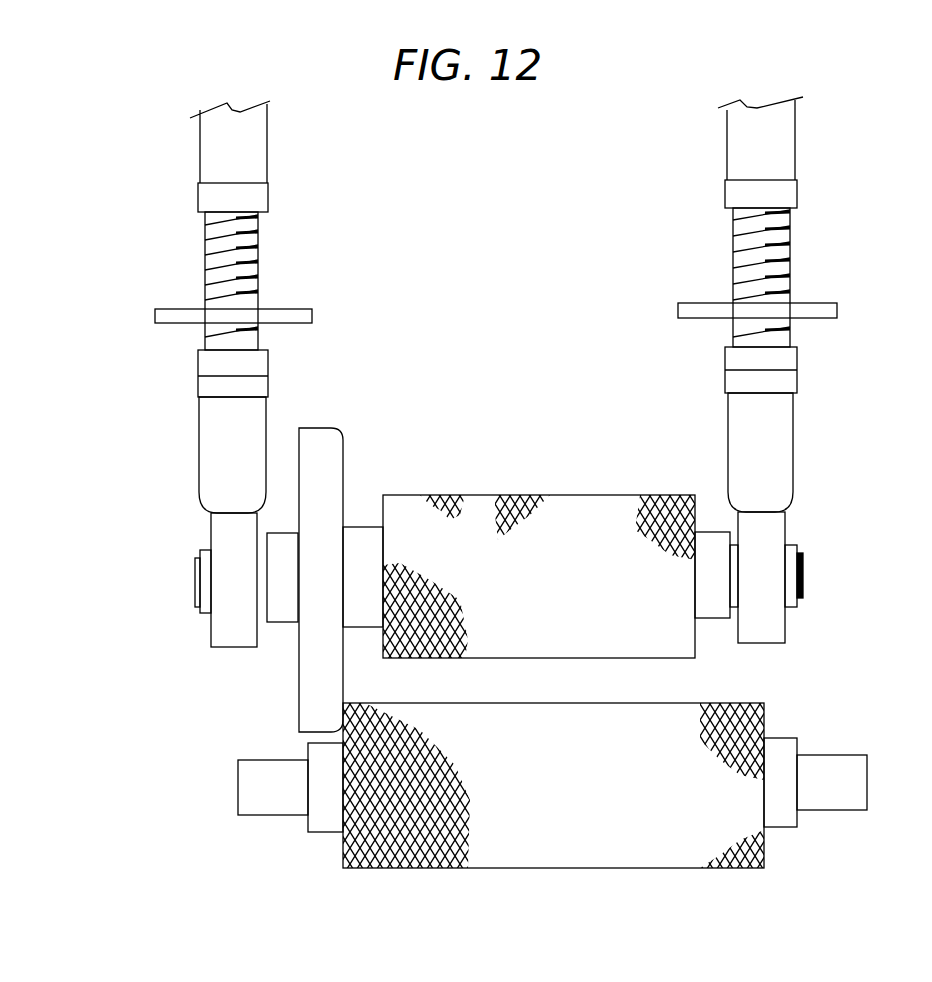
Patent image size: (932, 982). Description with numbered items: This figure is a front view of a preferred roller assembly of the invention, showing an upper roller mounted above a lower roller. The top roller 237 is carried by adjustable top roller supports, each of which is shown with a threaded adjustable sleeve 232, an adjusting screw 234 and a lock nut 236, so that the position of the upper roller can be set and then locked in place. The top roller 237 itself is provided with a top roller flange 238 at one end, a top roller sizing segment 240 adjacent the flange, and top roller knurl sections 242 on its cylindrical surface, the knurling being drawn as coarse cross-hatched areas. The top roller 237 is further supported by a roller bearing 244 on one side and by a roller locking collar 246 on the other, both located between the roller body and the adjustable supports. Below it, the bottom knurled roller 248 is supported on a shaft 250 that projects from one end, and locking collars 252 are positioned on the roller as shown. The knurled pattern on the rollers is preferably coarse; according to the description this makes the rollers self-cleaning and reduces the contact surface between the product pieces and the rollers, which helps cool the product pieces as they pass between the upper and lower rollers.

The threaded adjustable sleeve 232 is at (795, 158).
The adjusting screw 234 is at (790, 250).
The lock nut 236 is at (797, 365).
The top roller 237 is at (442, 495).
The top roller flange 238 is at (330, 428).
The top roller sizing segment 240 is at (363, 527).
The top roller knurl section 242 is at (512, 495).
The roller bearing 244 is at (793, 526).
The roller locking collar 246 is at (707, 532).
The bottom knurled roller 248 is at (764, 867).
The shaft 250 is at (858, 760).
The locking collar 252 is at (783, 738).